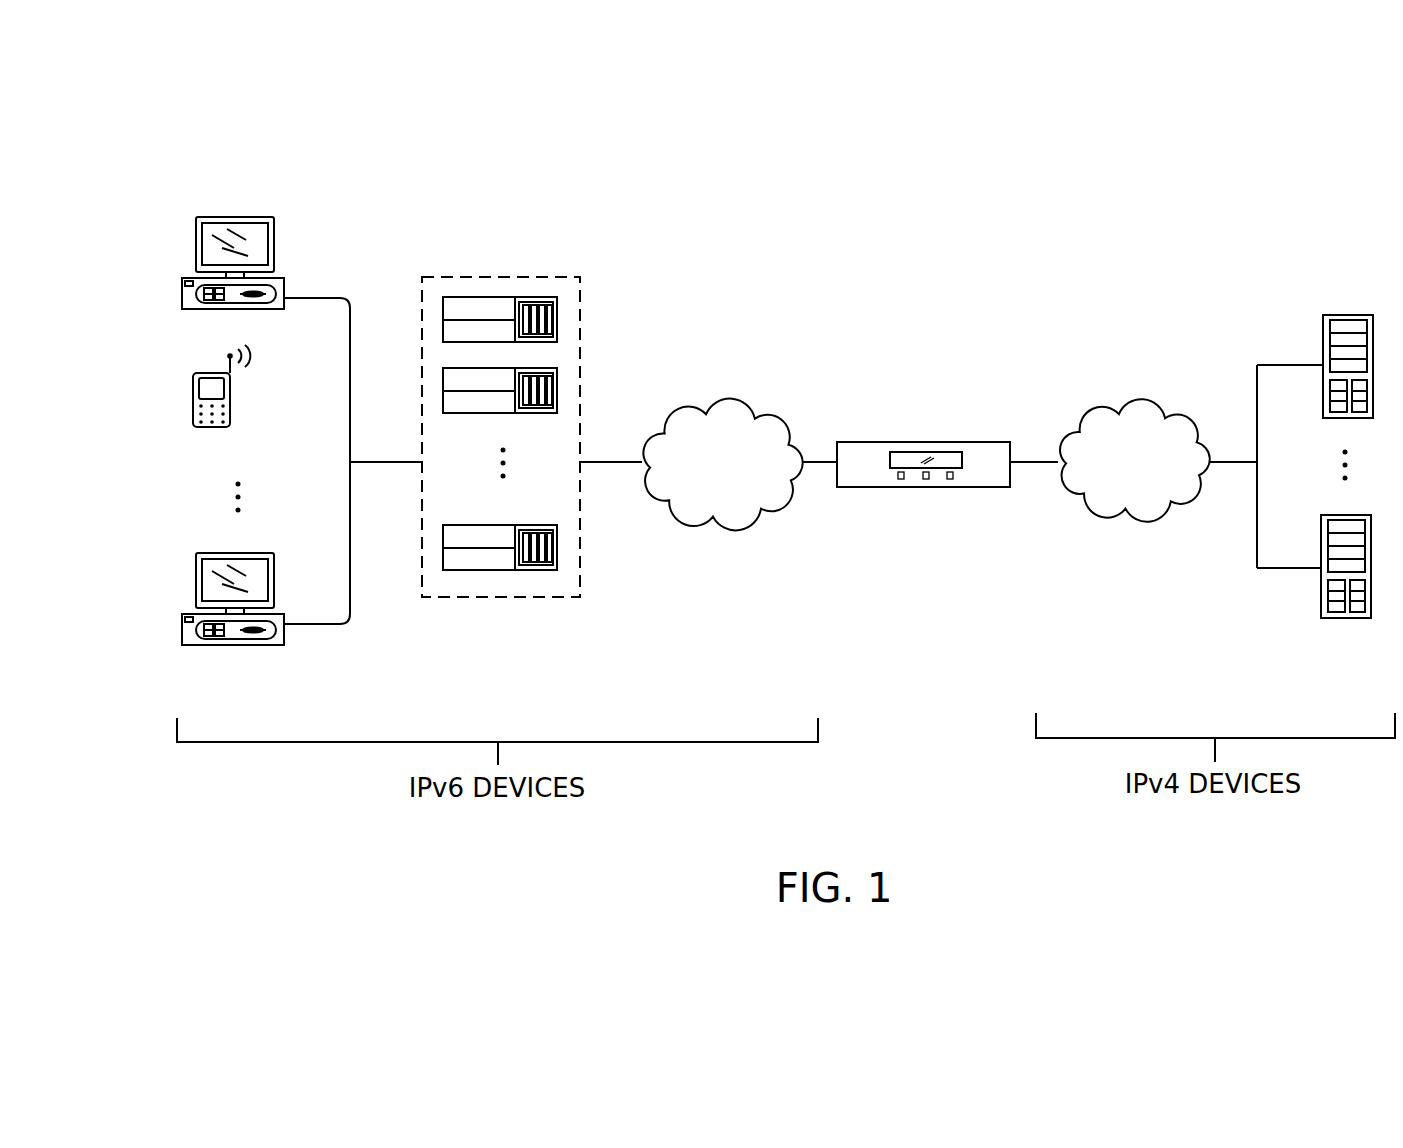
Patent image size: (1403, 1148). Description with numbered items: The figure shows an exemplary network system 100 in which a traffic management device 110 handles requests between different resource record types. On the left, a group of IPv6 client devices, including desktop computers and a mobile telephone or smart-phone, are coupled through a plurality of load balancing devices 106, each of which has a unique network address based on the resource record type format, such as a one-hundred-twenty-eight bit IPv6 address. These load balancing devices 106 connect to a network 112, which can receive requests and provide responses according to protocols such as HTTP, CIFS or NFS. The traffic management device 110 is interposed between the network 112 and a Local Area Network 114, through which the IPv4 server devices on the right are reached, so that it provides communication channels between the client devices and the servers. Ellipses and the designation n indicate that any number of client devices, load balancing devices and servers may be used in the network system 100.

The network system 100 is at (1312, 195).
The load balancing devices 106 is at (508, 597).
The traffic management device 110 is at (925, 442).
The network 112 is at (703, 496).
The Local Area Network 114 is at (1115, 491).